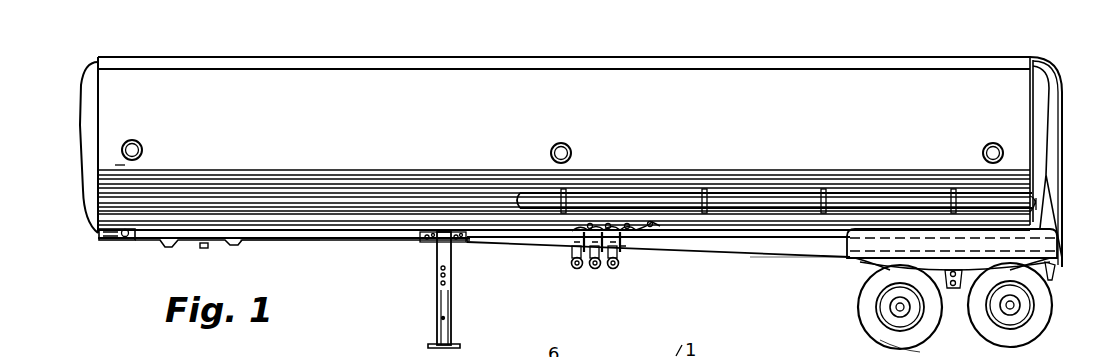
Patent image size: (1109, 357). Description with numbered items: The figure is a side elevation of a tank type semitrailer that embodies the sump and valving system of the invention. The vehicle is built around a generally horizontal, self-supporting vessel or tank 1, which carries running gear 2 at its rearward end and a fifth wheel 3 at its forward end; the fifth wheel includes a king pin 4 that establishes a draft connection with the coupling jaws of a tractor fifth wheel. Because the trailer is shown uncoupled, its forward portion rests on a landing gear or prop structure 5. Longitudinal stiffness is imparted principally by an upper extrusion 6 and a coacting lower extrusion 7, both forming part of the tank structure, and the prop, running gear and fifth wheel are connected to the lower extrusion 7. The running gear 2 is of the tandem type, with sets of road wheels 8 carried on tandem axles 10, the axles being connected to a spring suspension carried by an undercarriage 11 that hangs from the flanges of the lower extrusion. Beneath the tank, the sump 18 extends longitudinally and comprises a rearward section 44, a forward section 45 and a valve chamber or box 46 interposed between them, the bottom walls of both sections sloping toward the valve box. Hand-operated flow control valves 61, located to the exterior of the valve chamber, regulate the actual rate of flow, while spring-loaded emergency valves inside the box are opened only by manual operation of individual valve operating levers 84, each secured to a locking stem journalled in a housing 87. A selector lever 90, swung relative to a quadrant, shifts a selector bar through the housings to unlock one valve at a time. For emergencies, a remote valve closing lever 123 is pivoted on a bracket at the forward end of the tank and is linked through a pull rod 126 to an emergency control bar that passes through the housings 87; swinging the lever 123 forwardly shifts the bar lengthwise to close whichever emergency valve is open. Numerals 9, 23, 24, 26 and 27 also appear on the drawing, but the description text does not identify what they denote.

The tank 1 is at (312, 86).
The running gear 2 is at (849, 319).
The fifth wheel 3 is at (176, 247).
The king pin 4 is at (205, 250).
The landing gear 5 is at (430, 298).
The upper extrusion 6 is at (689, 62).
The lower extrusion 7 is at (372, 240).
The road wheels 8 is at (1035, 330).
The tire 9 is at (908, 340).
The tandem axles 10 is at (898, 307).
The undercarriage 11 is at (870, 259).
The sump 18 is at (742, 258).
The manhole cover 23 is at (480, 58).
The tank compartment 24 is at (600, 101).
The front head 26 is at (88, 126).
The rear head 27 is at (1040, 88).
The rearward sump section 44 is at (789, 246).
The forward sump section 45 is at (505, 244).
The valve box 46 is at (572, 247).
The flow control valves 61 is at (628, 250).
The valve operating lever 84 is at (627, 226).
The housing 87 is at (574, 227).
The selector lever 90 is at (660, 229).
The remote valve closing lever 123 is at (117, 240).
The pull rod 126 is at (283, 240).